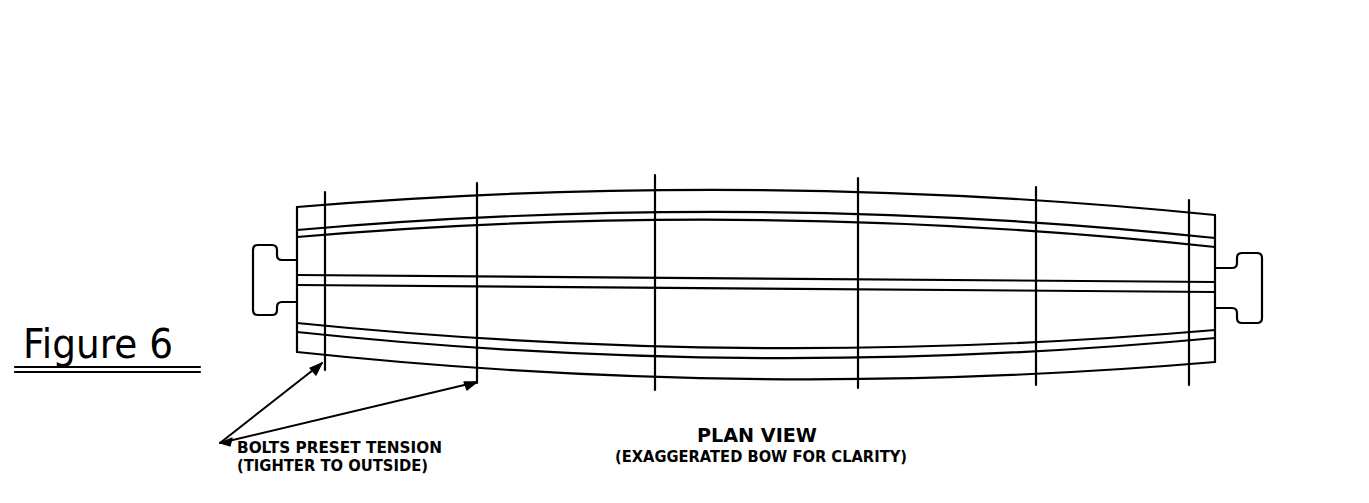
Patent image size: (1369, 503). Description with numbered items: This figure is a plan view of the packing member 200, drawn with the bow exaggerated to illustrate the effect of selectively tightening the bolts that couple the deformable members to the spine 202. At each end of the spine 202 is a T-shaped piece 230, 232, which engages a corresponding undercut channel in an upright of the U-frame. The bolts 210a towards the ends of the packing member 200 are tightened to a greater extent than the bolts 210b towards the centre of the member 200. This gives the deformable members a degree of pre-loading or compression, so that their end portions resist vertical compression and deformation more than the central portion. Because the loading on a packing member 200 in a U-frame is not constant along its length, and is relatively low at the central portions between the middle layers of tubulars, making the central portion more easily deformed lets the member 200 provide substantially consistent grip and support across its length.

The packing member 200 is at (1083, 140).
The spine 202 is at (742, 287).
The bolts towards the ends of the packing member 210a is at (1036, 385).
The bolts towards the centre of the member 210b is at (655, 388).
The T-shaped piece 230 is at (263, 247).
The T-shaped piece 232 is at (1262, 280).